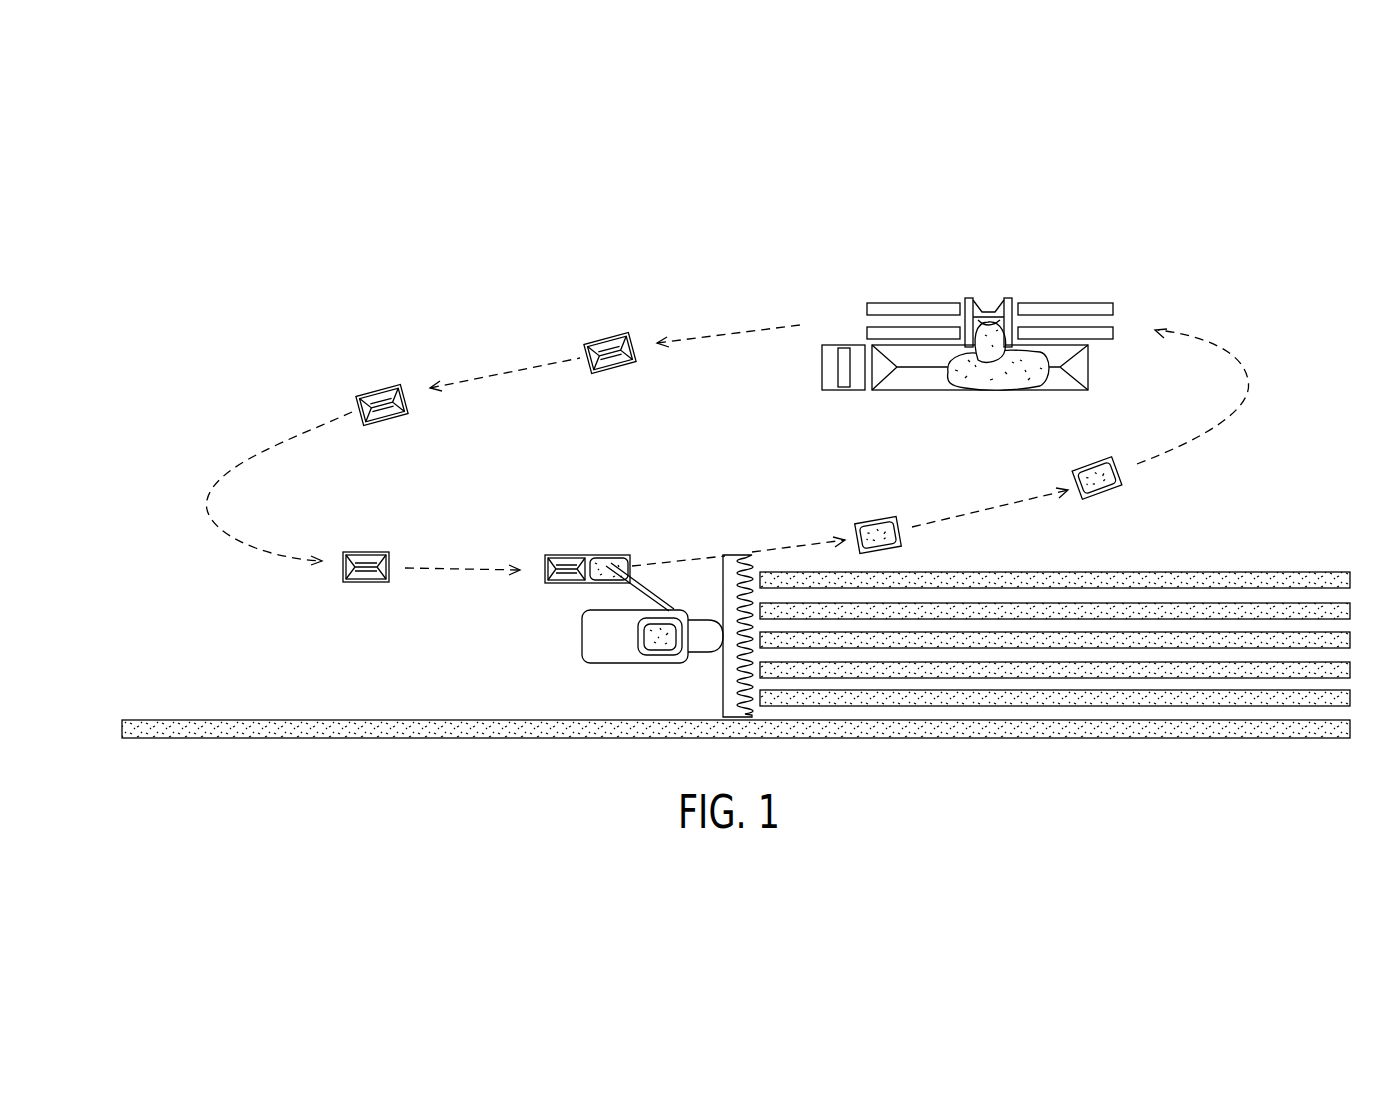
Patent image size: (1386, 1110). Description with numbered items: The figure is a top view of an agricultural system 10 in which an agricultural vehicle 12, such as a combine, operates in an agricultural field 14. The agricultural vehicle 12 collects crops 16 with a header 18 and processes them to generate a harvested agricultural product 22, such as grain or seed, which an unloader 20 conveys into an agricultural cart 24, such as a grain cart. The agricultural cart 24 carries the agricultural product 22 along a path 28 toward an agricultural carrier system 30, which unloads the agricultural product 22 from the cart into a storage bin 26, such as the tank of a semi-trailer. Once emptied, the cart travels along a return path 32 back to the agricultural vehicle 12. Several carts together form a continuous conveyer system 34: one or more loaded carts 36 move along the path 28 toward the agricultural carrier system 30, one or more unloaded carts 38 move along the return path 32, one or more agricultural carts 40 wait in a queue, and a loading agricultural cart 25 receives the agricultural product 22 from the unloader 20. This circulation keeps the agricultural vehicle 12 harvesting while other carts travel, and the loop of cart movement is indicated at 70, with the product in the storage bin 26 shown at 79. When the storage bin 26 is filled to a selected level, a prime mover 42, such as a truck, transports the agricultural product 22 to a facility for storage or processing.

The agricultural system 10 is at (1203, 280).
The agricultural vehicle 12 is at (665, 652).
The agricultural field 14 is at (892, 762).
The crops 16 is at (997, 575).
The header 18 is at (752, 556).
The unloader 20 is at (630, 585).
The agricultural product 22 is at (632, 565).
The agricultural cart 24 is at (540, 520).
The loading agricultural cart 25 is at (600, 555).
The storage bin 26 is at (908, 382).
The path 28 is at (697, 558).
The agricultural carrier system 30 is at (1066, 303).
The return path 32 is at (735, 333).
The continuous conveyer system 34 is at (233, 546).
The loaded carts 36 is at (880, 548).
The unloaded carts 38 is at (378, 390).
The agricultural carts in a queue 40 is at (568, 555).
The prime mover 42 is at (843, 392).
The circulation loop 70 is at (740, 240).
The bulk material 79 is at (1040, 390).